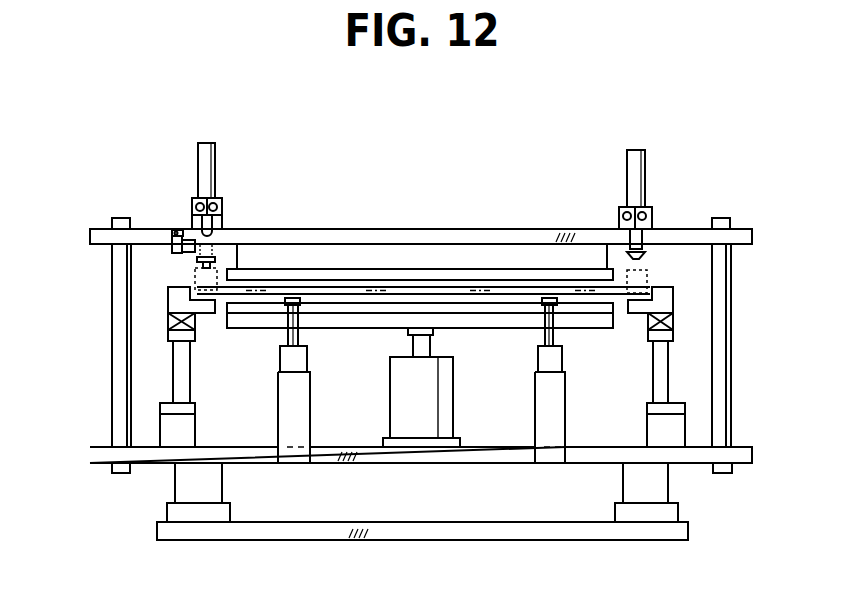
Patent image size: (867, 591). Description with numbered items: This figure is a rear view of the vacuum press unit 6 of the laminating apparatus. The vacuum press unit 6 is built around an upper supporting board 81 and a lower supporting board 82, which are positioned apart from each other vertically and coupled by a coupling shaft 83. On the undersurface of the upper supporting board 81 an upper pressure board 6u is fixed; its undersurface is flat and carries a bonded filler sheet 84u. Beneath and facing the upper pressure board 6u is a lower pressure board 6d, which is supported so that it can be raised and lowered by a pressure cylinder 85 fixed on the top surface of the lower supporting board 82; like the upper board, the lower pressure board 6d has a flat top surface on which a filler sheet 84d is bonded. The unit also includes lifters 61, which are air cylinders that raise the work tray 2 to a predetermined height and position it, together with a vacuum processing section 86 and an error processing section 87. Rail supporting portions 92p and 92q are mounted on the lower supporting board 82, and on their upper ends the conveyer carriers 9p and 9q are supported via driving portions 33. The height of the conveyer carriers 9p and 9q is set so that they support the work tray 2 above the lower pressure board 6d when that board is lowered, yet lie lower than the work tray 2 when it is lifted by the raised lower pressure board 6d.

The work tray 2 is at (655, 270).
The vacuum press unit 6 is at (777, 200).
The upper pressure board 6u is at (360, 244).
The lower pressure board 6d is at (507, 328).
The conveyer carrier 9p is at (168, 295).
The conveyer carrier 9q is at (673, 297).
The driving portion 33 is at (168, 322).
The lifter 61 is at (279, 348).
The upper supporting board 81 is at (540, 229).
The lower supporting board 82 is at (697, 464).
The coupling shaft 83 is at (112, 412).
The filler sheet 84u is at (458, 269).
The filler sheet 84d is at (597, 328).
The pressure cylinder 85 is at (390, 400).
The vacuum processing section 86 is at (652, 165).
The error processing section 87 is at (228, 163).
The rail supporting portion 92p is at (155, 430).
The rail supporting portion 92q is at (688, 421).